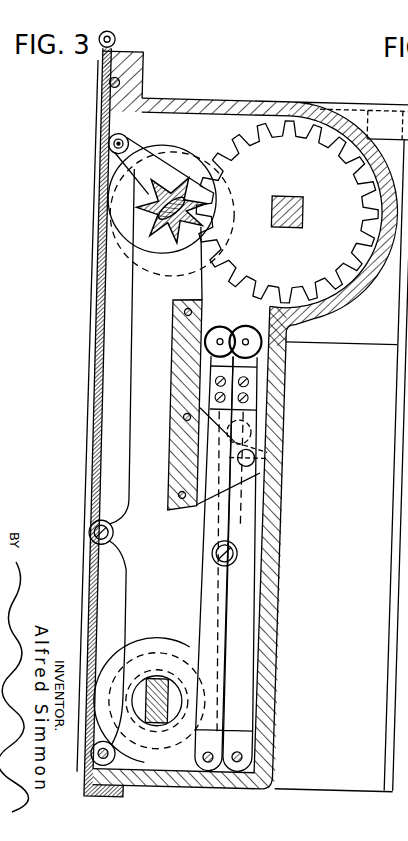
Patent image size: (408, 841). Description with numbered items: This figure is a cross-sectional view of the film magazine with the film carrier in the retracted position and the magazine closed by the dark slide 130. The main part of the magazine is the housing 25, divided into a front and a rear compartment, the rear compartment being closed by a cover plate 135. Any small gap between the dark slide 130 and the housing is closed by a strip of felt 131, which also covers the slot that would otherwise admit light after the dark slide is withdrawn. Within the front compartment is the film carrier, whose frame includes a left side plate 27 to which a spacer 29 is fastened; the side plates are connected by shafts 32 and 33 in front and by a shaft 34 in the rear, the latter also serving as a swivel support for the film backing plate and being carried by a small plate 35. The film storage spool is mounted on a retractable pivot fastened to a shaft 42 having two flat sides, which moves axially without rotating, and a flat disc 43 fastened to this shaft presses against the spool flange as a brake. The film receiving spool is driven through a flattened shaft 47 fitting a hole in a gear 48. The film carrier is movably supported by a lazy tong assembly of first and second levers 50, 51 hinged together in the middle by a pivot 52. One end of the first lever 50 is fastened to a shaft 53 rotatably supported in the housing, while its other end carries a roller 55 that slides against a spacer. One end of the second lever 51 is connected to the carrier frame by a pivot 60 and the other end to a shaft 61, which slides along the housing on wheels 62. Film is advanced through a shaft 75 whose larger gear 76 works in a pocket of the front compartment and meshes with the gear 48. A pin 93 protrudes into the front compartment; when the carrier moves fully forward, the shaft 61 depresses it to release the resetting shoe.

The housing 25 is at (177, 103).
The left side plate 27 is at (132, 326).
The spacer 29 is at (173, 304).
The shaft 32 is at (103, 148).
The shaft 33 is at (114, 754).
The shaft 34 is at (258, 455).
The small plate 35 is at (259, 473).
The shaft 42 is at (176, 678).
The flat disc 43 is at (106, 664).
The flattened shaft 47 is at (142, 208).
The gear 48 is at (144, 194).
The first lever 50 is at (246, 663).
The second lever 51 is at (206, 598).
The pivot 52 is at (214, 554).
The shaft 53 is at (262, 758).
The roller 55 is at (212, 328).
The pivot 60 is at (217, 768).
The shaft 61 is at (246, 342).
The wheel 62 is at (255, 326).
The shaft 75 is at (316, 176).
The gear 76 is at (238, 136).
The pin 93 is at (258, 432).
The dark slide 130 is at (96, 356).
The strip of felt 131 is at (110, 86).
The cover plate 135 is at (395, 488).